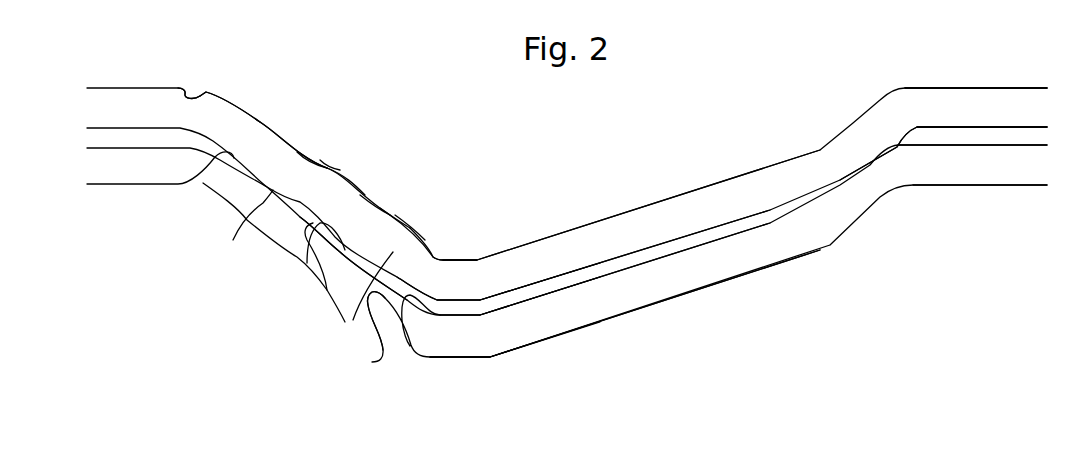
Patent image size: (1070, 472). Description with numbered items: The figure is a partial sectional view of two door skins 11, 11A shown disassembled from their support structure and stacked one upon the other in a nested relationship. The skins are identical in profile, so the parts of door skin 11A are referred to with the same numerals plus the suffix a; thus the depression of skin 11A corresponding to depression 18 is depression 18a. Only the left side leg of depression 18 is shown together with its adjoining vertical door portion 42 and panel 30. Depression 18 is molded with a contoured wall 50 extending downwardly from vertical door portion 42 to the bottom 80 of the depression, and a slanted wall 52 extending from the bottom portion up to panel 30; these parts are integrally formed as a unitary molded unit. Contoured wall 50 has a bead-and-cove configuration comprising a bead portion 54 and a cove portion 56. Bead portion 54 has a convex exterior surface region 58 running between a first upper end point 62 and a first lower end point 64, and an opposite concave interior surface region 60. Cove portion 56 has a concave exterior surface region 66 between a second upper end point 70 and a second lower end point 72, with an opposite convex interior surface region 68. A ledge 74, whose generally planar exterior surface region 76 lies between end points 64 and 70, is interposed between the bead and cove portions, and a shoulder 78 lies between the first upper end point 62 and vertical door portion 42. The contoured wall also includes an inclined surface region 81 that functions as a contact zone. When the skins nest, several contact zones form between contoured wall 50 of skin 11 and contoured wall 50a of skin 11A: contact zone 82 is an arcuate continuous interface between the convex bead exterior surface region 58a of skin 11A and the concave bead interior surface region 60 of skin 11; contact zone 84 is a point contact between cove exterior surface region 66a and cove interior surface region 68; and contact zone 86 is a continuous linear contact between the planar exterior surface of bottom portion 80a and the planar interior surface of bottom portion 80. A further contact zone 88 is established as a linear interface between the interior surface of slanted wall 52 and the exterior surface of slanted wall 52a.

The door skin 11 is at (1026, 96).
The door skin 11A is at (993, 173).
The depression 18 is at (478, 153).
The depression 18a is at (541, 362).
The panel 30 is at (946, 96).
The vertical door portion 42 is at (138, 98).
The contoured wall 50 is at (356, 300).
The contoured wall 50a is at (383, 350).
The slanted wall 52 is at (613, 243).
The slanted wall 52a is at (727, 266).
The bead portion 54 is at (224, 137).
The cove portion 56 is at (344, 227).
The convex exterior surface region 58 is at (268, 127).
The convex bead exterior surface region 58a is at (234, 158).
The concave interior surface region 60 is at (190, 186).
The first upper end point 62 is at (207, 92).
The first lower end point 64 is at (297, 153).
The concave exterior surface region 66 is at (363, 202).
The cove exterior surface region 66a is at (345, 265).
The convex interior surface region 68 is at (387, 213).
The second upper end point 70 is at (333, 168).
The second lower end point 72 is at (398, 209).
The ledge 74 is at (305, 192).
The exterior surface region 76 is at (318, 161).
The shoulder 78 is at (182, 90).
The bottom 80 is at (407, 271).
The bottom portion 80a is at (428, 344).
The inclined surface region 81 is at (405, 225).
The contact zone 82 is at (250, 222).
The contact zone 84 is at (307, 263).
The contact zone 86 is at (411, 345).
The contact zone 88 is at (871, 163).